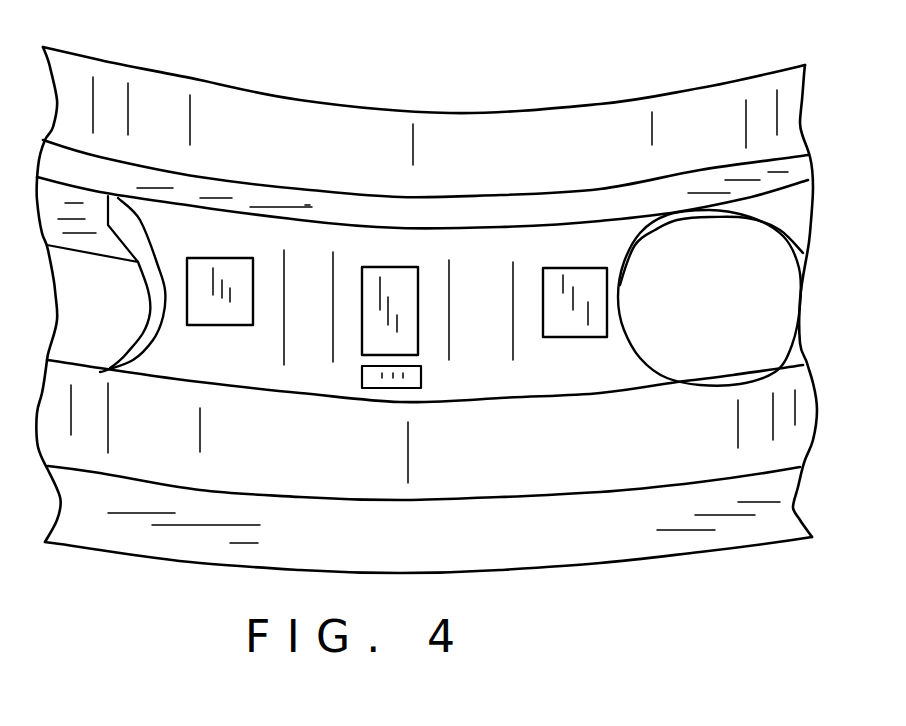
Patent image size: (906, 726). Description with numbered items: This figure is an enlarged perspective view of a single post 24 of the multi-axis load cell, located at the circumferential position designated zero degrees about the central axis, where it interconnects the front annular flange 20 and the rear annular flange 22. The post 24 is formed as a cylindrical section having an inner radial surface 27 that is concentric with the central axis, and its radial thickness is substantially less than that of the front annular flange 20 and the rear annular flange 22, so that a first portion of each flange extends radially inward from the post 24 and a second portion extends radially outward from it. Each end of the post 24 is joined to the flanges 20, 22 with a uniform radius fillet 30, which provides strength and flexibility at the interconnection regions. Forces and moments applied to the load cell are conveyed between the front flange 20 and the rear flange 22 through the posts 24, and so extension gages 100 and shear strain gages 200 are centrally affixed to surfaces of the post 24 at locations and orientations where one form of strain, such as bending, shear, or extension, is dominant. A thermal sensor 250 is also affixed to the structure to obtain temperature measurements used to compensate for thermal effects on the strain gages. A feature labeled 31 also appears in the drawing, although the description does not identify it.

The front annular flange 20 is at (466, 163).
The rear annular flange 22 is at (485, 477).
The post 24 is at (274, 250).
The inner radial surface 27 is at (296, 323).
The uniform radius fillet 30 is at (552, 227).
The opening 31 is at (138, 315).
The extension gage 100 is at (215, 263).
The shear strain gage 200 is at (407, 292).
The thermal sensor 250 is at (393, 378).